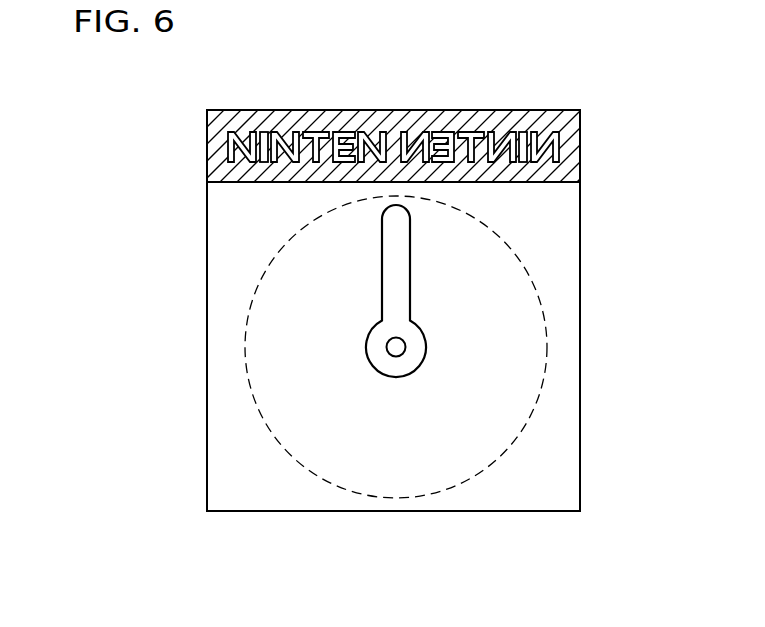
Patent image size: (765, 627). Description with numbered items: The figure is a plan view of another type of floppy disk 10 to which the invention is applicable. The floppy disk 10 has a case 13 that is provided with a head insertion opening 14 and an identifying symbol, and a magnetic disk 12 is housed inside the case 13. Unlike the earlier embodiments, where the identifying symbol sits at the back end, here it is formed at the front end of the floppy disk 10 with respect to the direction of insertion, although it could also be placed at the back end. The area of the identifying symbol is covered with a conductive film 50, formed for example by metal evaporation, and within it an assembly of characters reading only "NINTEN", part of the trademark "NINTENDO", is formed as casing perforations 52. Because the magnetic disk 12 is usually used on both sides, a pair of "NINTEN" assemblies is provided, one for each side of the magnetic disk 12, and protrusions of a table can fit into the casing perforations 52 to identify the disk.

The floppy disk 10 is at (584, 232).
The magnetic disk 12 is at (450, 480).
The case 13 is at (571, 423).
The head insertion opening 14 is at (411, 262).
The conductive film 50 is at (393, 128).
The casing perforations 52 is at (283, 136).